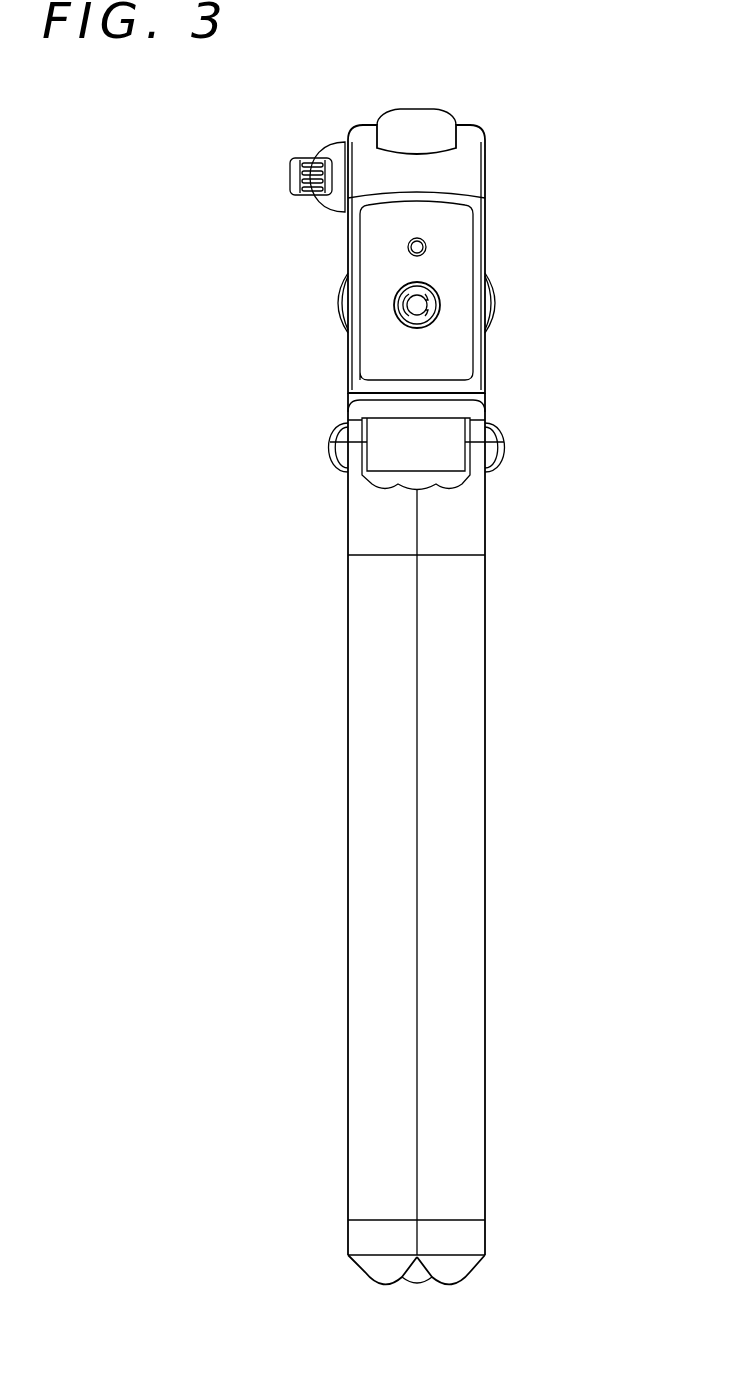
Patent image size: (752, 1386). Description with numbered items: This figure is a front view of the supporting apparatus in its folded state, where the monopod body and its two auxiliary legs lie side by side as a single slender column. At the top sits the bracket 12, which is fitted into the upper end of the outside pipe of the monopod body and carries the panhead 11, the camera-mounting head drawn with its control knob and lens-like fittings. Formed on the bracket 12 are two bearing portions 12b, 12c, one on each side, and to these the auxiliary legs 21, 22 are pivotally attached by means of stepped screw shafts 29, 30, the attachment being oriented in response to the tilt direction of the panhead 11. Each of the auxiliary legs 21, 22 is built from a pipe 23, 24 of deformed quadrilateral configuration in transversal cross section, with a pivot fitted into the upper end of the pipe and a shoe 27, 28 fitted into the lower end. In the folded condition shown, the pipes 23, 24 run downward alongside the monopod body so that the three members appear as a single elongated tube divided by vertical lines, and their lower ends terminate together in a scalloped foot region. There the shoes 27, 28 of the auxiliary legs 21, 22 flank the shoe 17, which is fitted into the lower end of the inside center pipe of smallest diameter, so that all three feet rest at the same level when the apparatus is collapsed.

The panhead 11 is at (455, 305).
The bracket 12 is at (437, 430).
The bearing portion 12b is at (493, 441).
The bearing portion 12c is at (347, 442).
The stepped screw shaft 29 is at (502, 464).
The stepped screw shaft 30 is at (332, 464).
The auxiliary leg 21 is at (486, 773).
The auxiliary leg 22 is at (347, 773).
The pipe 23 is at (460, 873).
The pipe 24 is at (365, 865).
The shoe 17 is at (415, 1272).
The shoe 27 is at (455, 1267).
The shoe 28 is at (370, 1265).